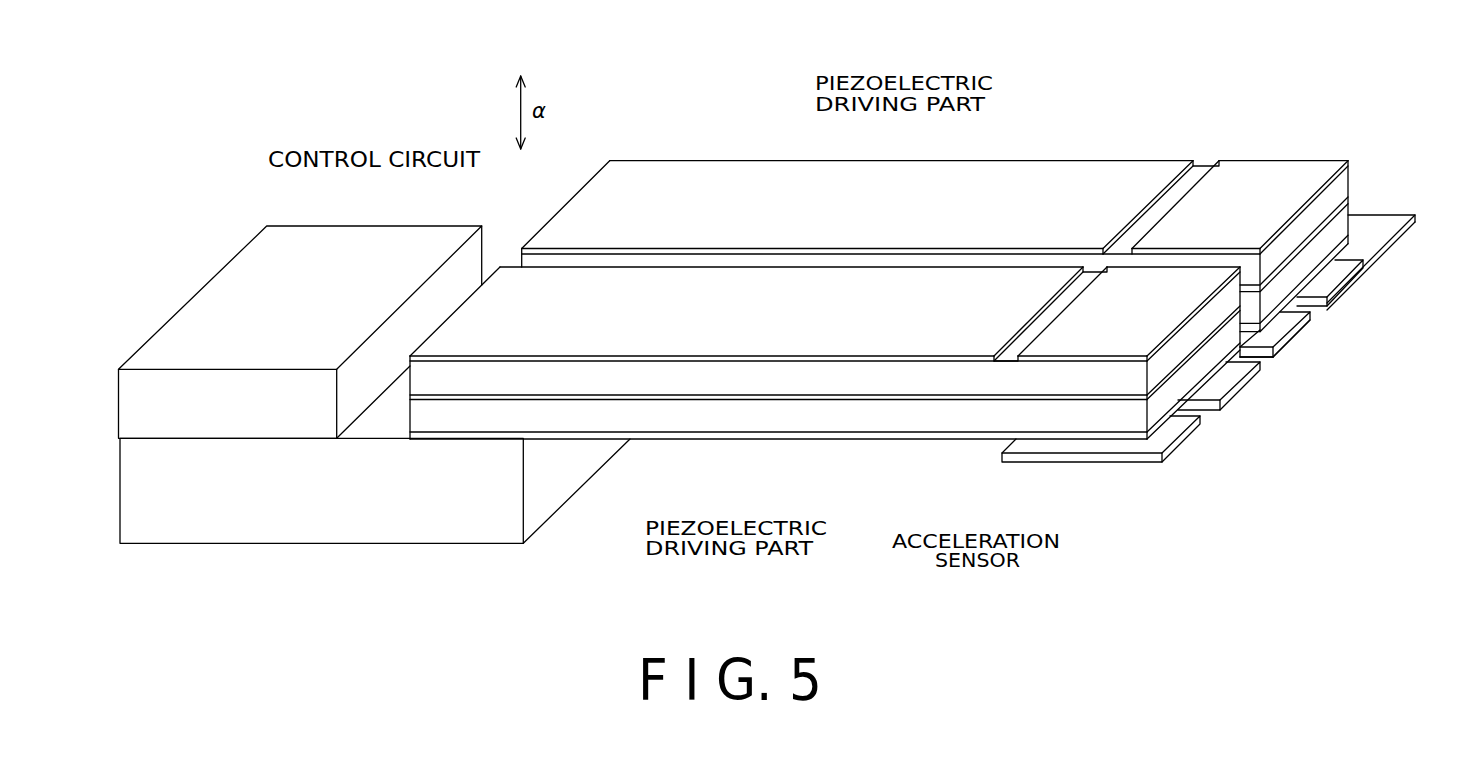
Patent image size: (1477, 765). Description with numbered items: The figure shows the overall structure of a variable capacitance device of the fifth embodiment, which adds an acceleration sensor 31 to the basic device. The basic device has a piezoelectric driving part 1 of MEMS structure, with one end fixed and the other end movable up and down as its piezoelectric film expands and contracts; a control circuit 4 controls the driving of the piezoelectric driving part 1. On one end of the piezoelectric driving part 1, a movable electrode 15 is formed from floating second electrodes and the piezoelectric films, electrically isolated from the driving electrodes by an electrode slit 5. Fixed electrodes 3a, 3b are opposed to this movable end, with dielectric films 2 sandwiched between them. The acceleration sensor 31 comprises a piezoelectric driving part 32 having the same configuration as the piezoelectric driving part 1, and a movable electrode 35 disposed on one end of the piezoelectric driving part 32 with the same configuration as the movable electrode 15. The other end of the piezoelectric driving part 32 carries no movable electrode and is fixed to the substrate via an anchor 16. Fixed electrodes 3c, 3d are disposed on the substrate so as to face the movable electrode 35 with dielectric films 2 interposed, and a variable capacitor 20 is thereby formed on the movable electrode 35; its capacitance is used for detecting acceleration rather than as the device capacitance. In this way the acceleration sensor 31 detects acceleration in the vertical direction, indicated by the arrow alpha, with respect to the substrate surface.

The piezoelectric driving part 1 is at (823, 188).
The dielectric films 2 is at (1285, 322).
The fixed electrode 3a is at (1263, 358).
The fixed electrode 3b is at (1380, 230).
The fixed electrode 3c is at (1165, 440).
The fixed electrode 3d is at (1292, 348).
The control circuit 4 is at (348, 245).
The electrode slit 5 is at (1200, 168).
The movable electrode 15 is at (1263, 181).
The anchor 16 is at (393, 520).
The variable capacitor 20 is at (1343, 270).
The acceleration sensor 31 is at (910, 458).
The piezoelectric driving part 32 is at (730, 443).
The movable electrode 35 is at (1159, 292).